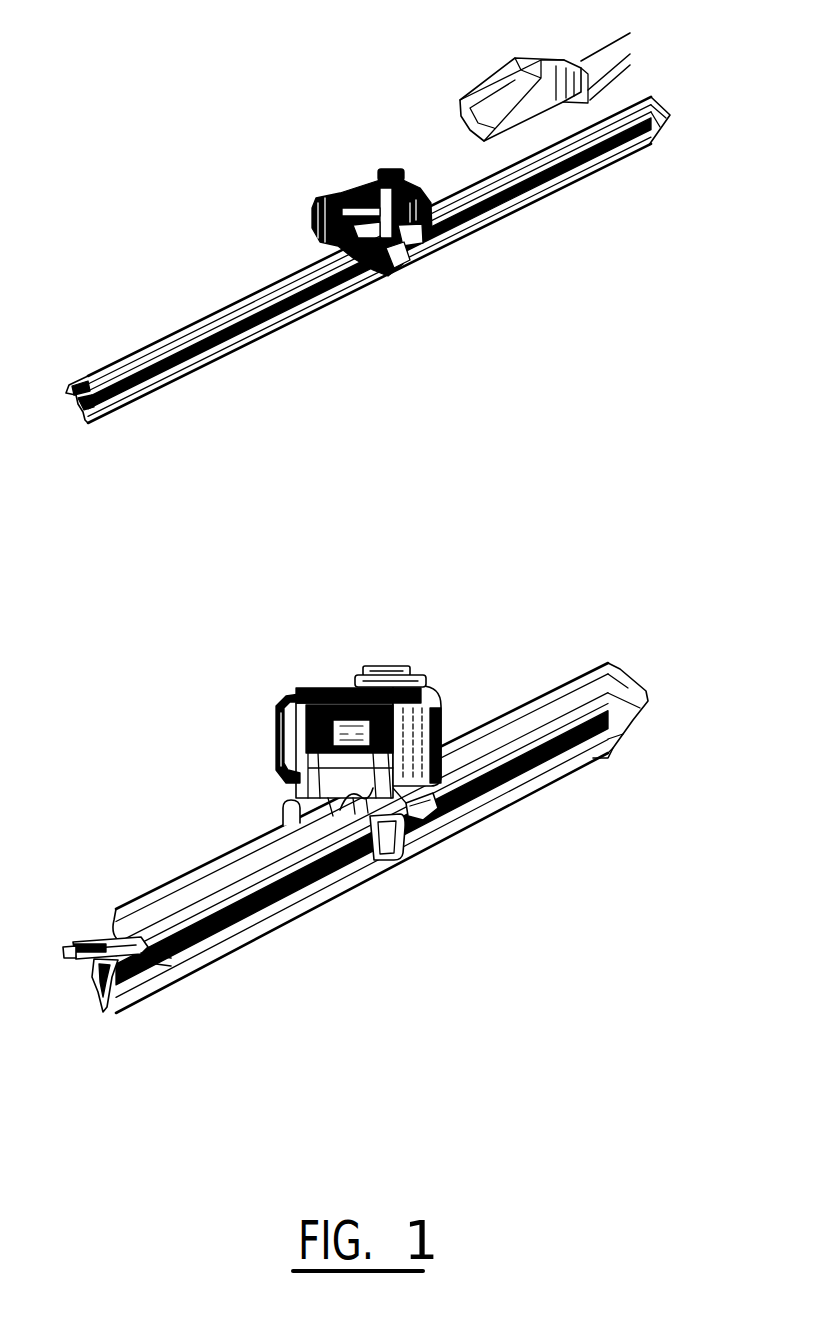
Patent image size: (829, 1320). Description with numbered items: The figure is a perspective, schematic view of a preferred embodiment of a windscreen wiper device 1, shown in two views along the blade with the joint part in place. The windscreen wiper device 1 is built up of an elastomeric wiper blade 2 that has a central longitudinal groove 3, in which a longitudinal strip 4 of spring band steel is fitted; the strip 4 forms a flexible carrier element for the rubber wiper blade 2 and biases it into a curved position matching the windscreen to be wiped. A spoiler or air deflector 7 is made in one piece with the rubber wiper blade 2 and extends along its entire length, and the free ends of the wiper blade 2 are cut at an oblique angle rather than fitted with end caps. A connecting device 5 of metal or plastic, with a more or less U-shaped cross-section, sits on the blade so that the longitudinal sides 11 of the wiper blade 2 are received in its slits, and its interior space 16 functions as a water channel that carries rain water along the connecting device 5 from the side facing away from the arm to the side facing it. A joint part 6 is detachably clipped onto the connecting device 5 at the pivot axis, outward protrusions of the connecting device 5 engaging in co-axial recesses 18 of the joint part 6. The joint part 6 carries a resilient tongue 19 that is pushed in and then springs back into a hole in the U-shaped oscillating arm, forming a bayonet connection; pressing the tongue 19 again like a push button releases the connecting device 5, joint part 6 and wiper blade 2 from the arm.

The windscreen wiper device 1 is at (237, 166).
The wiper blade 2 is at (172, 378).
The central longitudinal groove 3 is at (63, 376).
The longitudinal strip 4 is at (93, 937).
The connecting device 5 is at (388, 246).
The joint part 6 is at (337, 191).
The spoiler 7 is at (214, 308).
The longitudinal sides 11 is at (60, 944).
The interior space 16 is at (338, 770).
The co-axial recesses 18 is at (410, 208).
The resilient tongue 19 is at (390, 168).